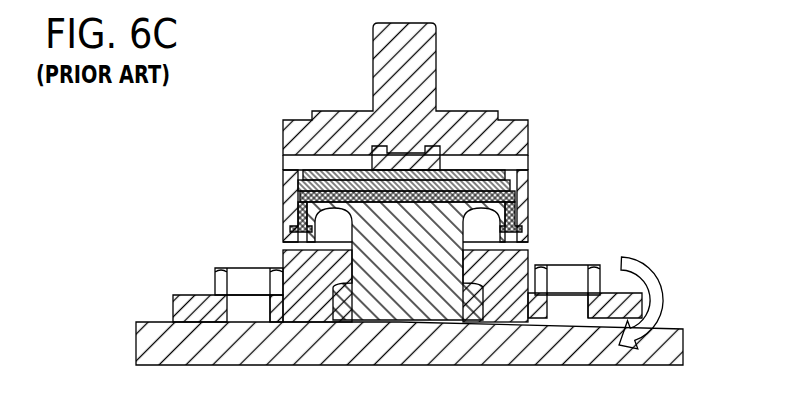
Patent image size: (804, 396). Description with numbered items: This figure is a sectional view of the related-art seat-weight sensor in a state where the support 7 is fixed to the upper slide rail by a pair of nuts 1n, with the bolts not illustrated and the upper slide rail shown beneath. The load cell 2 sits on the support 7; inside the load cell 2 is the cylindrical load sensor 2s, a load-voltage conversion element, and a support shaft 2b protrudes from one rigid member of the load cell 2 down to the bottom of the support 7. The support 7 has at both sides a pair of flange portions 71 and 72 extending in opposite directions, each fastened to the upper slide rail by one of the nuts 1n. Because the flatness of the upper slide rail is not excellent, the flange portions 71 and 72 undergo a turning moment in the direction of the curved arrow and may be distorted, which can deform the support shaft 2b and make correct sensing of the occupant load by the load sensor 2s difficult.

The load cell 2 is at (531, 123).
The load sensor 2s is at (507, 168).
The support shaft 2b is at (510, 199).
The support 7 is at (282, 249).
The flange portion 71 is at (640, 262).
The flange portion 72 is at (182, 294).
The nut 1n is at (250, 266).